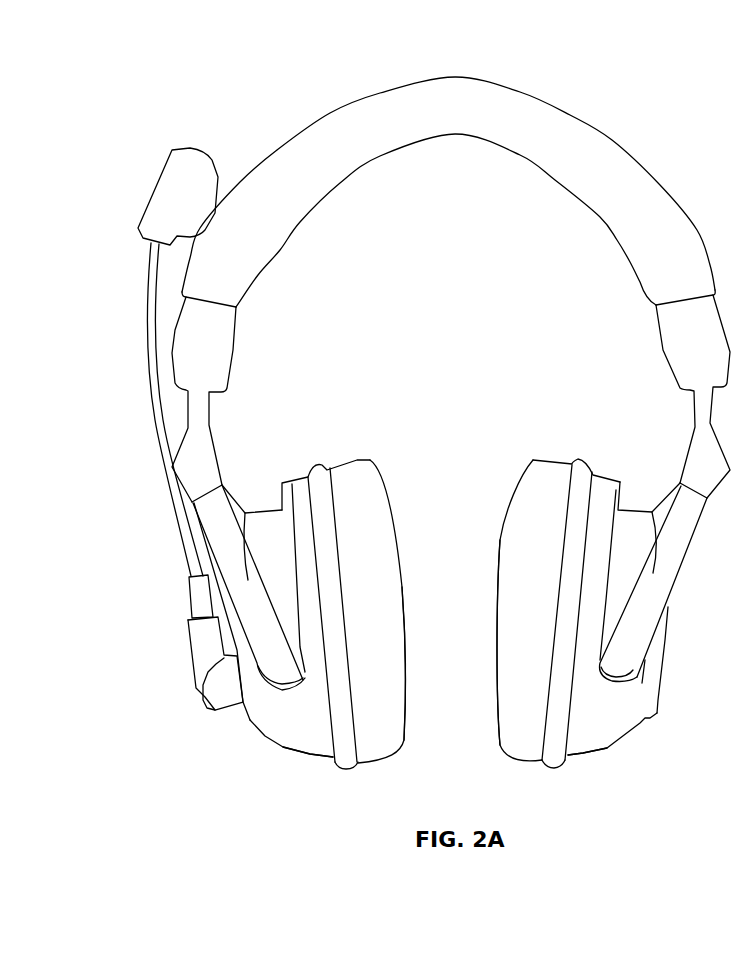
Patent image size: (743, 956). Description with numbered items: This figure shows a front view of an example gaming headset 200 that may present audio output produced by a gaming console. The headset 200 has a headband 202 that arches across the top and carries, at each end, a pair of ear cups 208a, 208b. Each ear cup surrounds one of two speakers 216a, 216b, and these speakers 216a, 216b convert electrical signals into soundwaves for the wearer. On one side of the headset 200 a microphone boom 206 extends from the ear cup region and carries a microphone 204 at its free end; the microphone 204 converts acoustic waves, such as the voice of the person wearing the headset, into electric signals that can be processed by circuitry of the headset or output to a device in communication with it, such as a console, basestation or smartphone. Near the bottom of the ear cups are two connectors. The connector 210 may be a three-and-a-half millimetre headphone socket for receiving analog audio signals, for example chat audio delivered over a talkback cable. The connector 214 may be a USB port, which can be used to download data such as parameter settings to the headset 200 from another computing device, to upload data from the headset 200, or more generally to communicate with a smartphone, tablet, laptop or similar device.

The headset 200 is at (242, 110).
The headband 202 is at (592, 123).
The microphone 204 is at (153, 196).
The microphone boom 206 is at (150, 388).
The ear cup 208a is at (380, 451).
The ear cup 208b is at (543, 461).
The connector 210 is at (312, 756).
The connector 214 is at (587, 755).
The speaker 216a is at (409, 580).
The speaker 216b is at (493, 547).